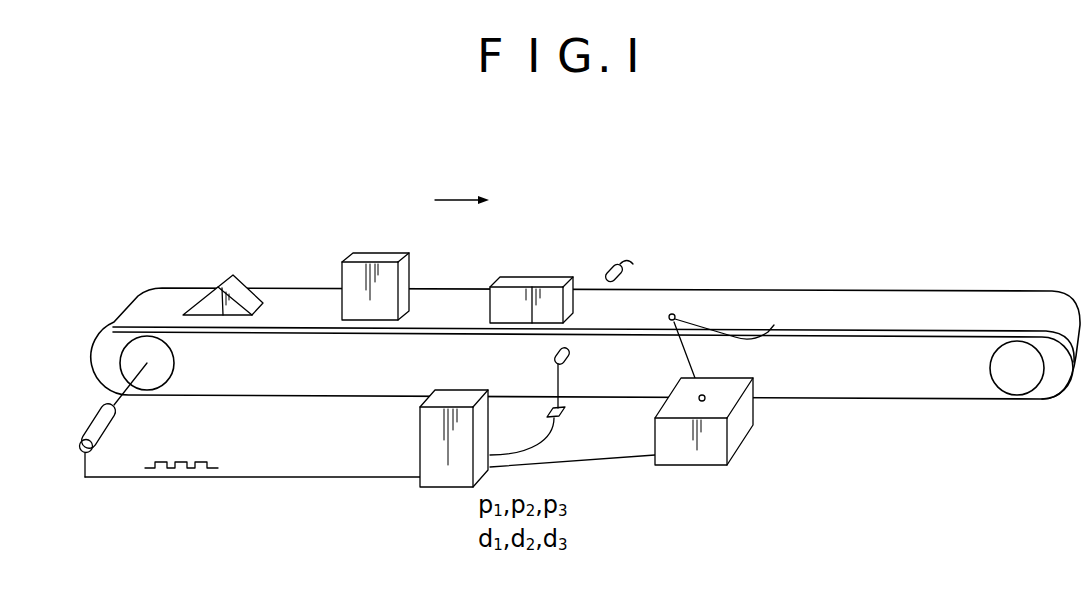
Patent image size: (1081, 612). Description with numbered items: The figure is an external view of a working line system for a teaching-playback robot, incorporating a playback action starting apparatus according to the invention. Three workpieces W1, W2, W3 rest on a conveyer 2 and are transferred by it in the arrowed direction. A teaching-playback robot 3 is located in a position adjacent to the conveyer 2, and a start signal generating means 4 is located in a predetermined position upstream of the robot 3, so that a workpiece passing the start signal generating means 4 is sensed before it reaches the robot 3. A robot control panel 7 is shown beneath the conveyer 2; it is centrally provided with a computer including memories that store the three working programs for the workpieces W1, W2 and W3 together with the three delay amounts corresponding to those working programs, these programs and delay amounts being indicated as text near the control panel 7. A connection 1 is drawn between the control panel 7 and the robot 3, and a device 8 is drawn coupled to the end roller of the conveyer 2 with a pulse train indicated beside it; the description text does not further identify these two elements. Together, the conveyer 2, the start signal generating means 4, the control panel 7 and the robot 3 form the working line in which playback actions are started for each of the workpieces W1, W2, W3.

The signal line between measuring unit and computing unit 1 is at (575, 467).
The conveyer 2 is at (150, 307).
The teaching-playback robot 3 is at (743, 428).
The start signal generating means 4 is at (555, 356).
The robot control panel 7 is at (430, 476).
The rotary pulse encoder 8 is at (113, 418).
The workpiece W1 is at (517, 281).
The workpiece W2 is at (380, 257).
The workpiece W3 is at (242, 283).